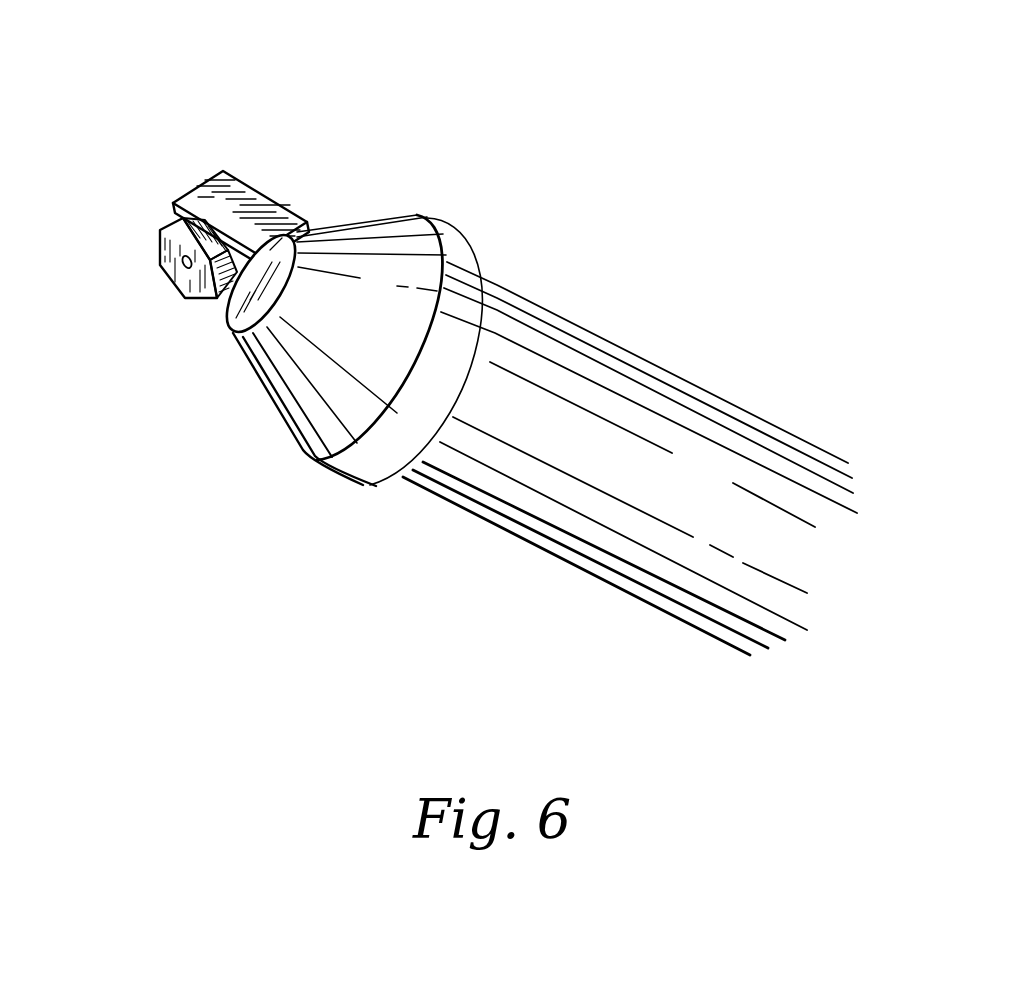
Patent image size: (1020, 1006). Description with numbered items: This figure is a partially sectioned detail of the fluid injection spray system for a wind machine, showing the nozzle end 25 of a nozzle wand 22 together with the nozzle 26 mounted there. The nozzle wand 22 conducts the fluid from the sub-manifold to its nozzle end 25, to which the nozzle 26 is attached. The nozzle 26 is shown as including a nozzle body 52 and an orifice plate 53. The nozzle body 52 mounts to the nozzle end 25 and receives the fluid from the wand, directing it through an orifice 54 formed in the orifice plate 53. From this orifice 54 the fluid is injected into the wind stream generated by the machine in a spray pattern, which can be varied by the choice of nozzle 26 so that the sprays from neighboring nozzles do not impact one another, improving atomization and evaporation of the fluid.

The nozzle 26 is at (169, 134).
The nozzle body 52 is at (253, 193).
The orifice plate 53 is at (168, 272).
The orifice 54 is at (185, 270).
The nozzle end 25 is at (535, 337).
The nozzle wand 22 is at (750, 467).